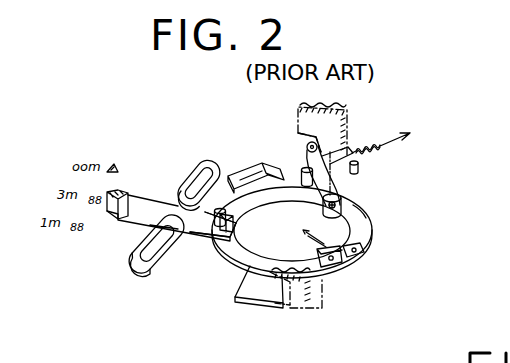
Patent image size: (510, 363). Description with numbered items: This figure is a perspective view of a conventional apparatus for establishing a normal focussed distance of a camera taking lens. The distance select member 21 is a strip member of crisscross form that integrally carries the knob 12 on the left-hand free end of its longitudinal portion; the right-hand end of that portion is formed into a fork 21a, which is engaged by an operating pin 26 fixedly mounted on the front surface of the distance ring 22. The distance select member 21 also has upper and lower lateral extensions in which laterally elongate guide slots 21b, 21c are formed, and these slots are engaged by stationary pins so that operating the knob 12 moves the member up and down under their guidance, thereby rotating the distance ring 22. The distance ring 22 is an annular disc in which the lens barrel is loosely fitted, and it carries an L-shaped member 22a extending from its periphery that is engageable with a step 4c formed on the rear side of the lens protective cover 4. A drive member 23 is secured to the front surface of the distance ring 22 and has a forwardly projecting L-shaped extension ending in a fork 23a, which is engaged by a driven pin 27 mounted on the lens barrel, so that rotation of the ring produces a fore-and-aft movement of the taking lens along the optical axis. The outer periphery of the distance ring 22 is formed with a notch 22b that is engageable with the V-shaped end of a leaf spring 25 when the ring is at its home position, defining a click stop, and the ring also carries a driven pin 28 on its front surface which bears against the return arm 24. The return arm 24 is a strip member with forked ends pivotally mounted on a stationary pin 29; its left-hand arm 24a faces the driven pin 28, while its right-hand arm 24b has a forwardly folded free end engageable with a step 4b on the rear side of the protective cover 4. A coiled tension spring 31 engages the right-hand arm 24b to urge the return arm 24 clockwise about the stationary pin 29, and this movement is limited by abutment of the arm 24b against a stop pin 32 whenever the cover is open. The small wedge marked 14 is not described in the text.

The lens protective cover 4 is at (344, 108).
The step 4b is at (300, 134).
The step 4c is at (274, 305).
The knob 12 is at (125, 192).
The indicator wedge 14 is at (116, 165).
The distance select member 21 is at (138, 223).
The fork 21a is at (212, 236).
The guide slot 21b is at (202, 177).
The guide slot 21c is at (150, 257).
The distance ring 22 is at (368, 231).
The L-shaped member 22a is at (250, 291).
The notch 22b is at (265, 197).
The drive member 23 is at (358, 255).
The fork 23a is at (338, 268).
The return arm 24 is at (341, 186).
The left-hand arm 24a is at (327, 202).
The right-hand arm 24b is at (350, 147).
The leaf spring 25 is at (244, 173).
The operating pin 26 is at (216, 223).
The driven pin 27 is at (309, 238).
The driven pin 28 is at (306, 168).
The stationary pin 29 is at (360, 207).
The coiled tension spring 31 is at (380, 149).
The stop pin 32 is at (358, 168).